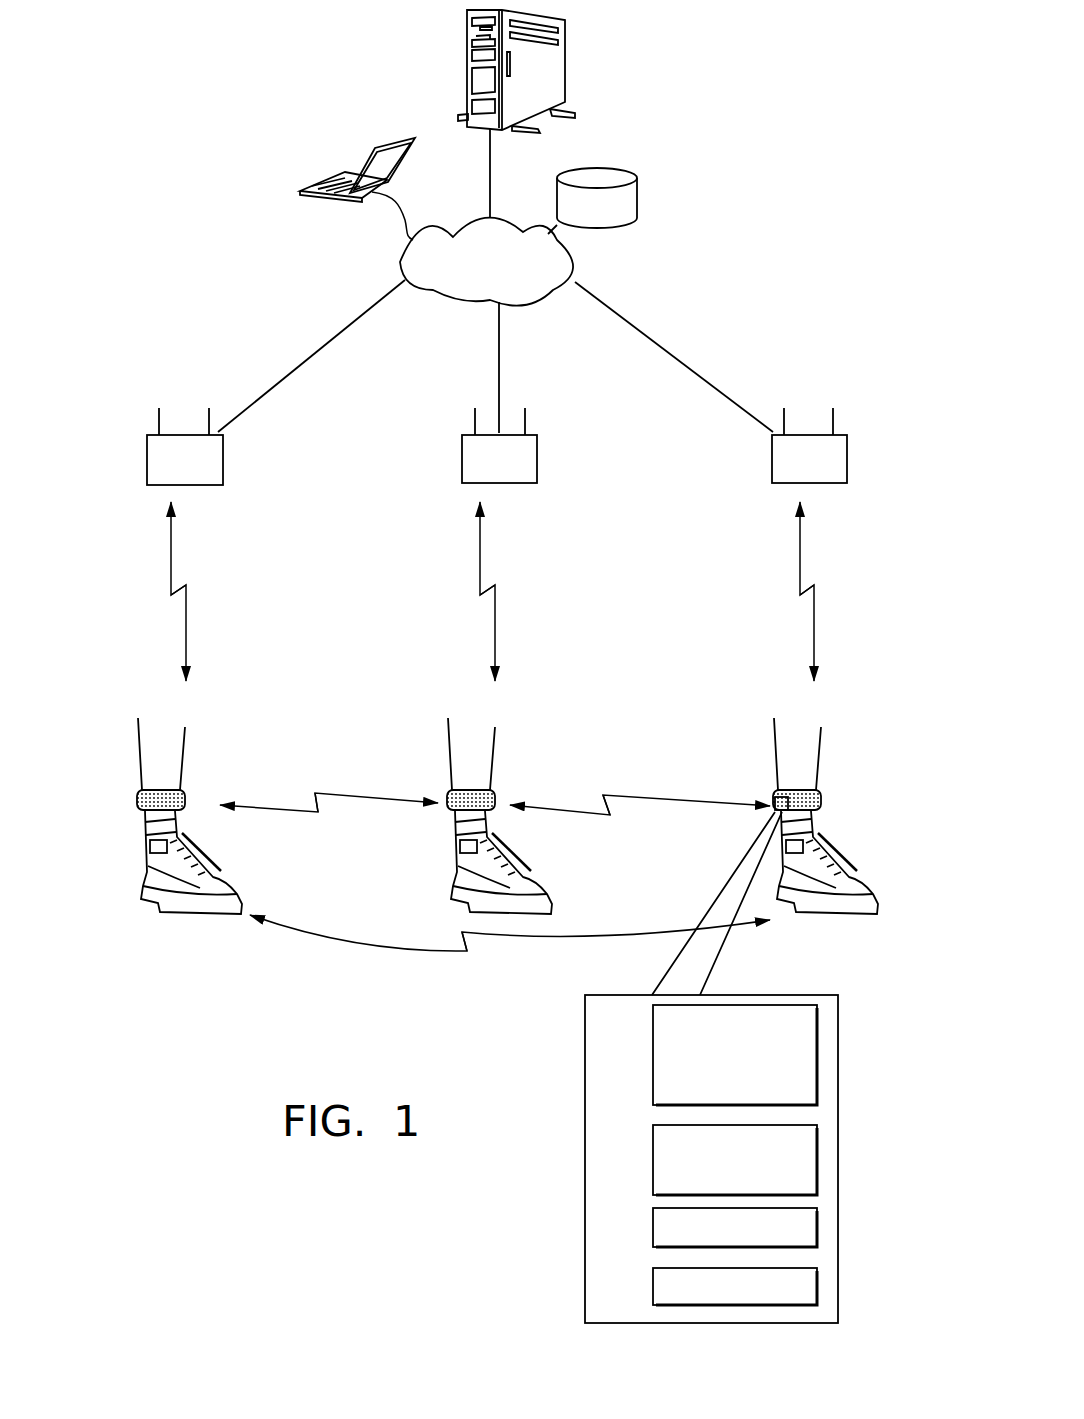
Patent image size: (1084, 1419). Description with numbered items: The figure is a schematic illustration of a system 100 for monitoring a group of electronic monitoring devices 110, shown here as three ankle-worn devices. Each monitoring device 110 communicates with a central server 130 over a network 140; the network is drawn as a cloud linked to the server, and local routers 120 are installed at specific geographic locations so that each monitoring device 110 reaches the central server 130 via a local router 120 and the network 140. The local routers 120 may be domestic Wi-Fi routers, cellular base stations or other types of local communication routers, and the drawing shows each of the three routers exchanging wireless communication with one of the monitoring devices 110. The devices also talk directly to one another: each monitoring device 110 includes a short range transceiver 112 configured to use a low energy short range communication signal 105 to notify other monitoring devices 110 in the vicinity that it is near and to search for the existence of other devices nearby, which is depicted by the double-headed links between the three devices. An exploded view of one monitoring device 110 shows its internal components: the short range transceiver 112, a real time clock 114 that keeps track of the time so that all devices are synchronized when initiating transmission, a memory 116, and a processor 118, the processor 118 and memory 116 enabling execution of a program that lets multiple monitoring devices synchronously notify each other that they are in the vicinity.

The system 100 is at (822, 210).
The low energy short range communication signal 105 is at (360, 945).
The electronic monitoring device 110 is at (187, 793).
The short range transceiver 112 is at (653, 1038).
The real time clock 114 is at (653, 1158).
The memory 116 is at (653, 1227).
The processor 118 is at (653, 1287).
The local router 120 is at (147, 457).
The central server 130 is at (467, 55).
The network 140 is at (437, 297).